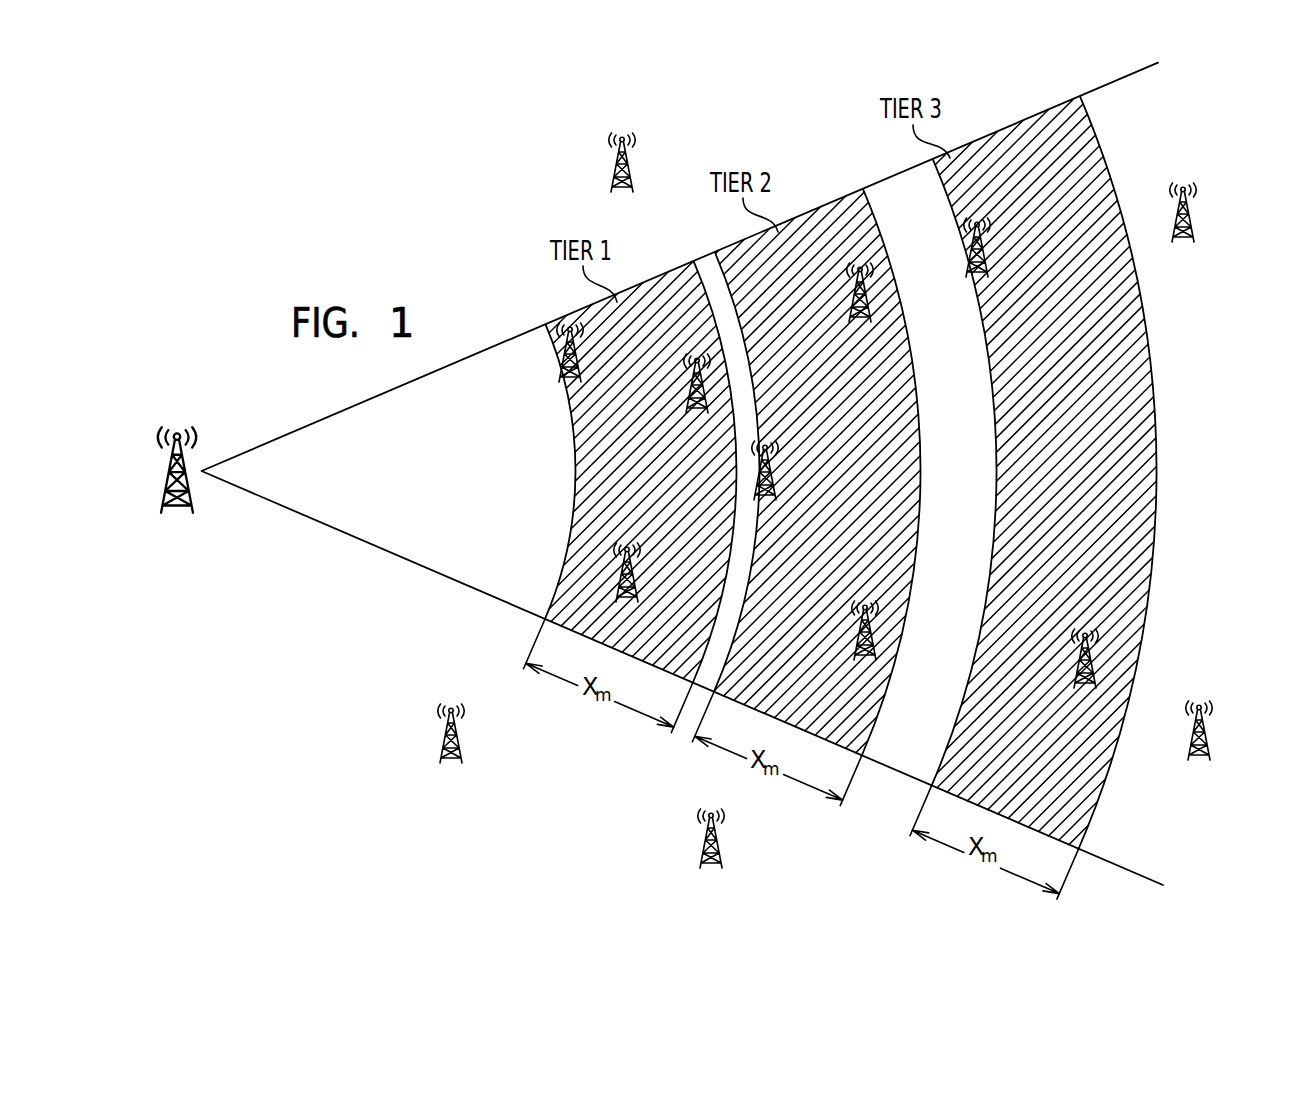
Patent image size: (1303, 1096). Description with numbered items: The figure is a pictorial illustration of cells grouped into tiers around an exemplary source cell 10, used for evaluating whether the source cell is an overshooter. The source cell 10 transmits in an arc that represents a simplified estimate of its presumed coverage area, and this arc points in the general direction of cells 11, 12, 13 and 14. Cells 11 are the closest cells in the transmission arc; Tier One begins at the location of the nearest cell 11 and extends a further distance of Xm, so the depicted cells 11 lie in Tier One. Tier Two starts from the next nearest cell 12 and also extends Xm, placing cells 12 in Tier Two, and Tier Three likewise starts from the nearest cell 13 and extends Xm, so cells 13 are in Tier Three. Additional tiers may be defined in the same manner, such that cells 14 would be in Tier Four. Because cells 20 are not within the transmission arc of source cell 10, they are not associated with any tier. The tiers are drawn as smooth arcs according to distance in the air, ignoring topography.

The source cell 10 is at (188, 494).
The cells in Tier 1 11 is at (578, 350).
The cells in Tier 2 12 is at (852, 294).
The cells in Tier 3 13 is at (985, 250).
The cells in Tier 4 14 is at (1190, 212).
The cells outside the transmission arc 20 is at (611, 168).